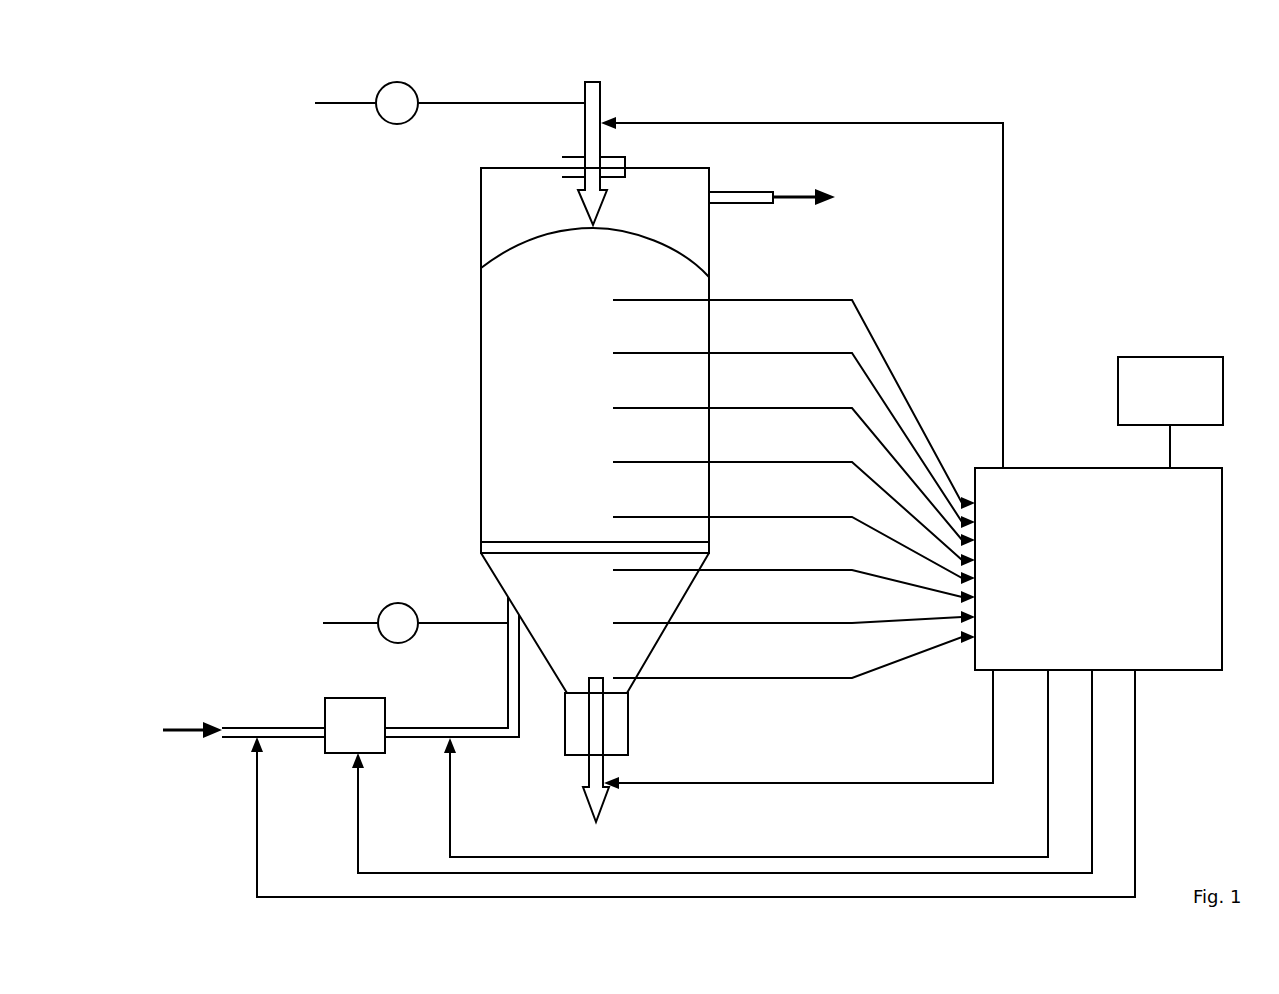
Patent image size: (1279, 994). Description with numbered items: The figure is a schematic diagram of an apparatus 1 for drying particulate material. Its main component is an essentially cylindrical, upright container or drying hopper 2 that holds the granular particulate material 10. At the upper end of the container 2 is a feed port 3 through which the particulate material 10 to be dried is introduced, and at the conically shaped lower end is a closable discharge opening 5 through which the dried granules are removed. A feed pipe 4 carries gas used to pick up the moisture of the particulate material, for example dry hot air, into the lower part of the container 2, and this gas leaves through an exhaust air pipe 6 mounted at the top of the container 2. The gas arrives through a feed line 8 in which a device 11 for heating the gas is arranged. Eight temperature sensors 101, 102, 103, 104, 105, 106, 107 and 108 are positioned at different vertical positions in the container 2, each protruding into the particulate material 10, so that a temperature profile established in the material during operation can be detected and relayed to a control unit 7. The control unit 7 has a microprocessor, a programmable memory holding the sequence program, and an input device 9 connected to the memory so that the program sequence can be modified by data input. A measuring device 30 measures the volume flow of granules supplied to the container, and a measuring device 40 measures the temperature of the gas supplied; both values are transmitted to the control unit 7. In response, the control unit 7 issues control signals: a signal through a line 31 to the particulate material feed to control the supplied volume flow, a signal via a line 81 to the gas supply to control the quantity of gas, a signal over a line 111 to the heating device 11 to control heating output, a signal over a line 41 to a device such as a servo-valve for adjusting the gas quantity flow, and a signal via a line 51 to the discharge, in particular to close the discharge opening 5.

The apparatus for drying particulate material 1 is at (1136, 163).
The drying hopper 2 is at (481, 286).
The feed port 3 is at (570, 157).
The feed pipe 4 is at (508, 683).
The discharge opening 5 is at (628, 750).
The exhaust air pipe 6 is at (730, 186).
The control unit 7 is at (1048, 467).
The feed line 8 is at (312, 727).
The input device 9 is at (1167, 355).
The particulate material 10 is at (497, 409).
The device for heating the gas 11 is at (377, 698).
The measuring device 30 is at (384, 123).
The line 31 is at (627, 120).
The measuring device 40 is at (401, 603).
The line 41 is at (450, 814).
The line 51 is at (740, 779).
The line 81 is at (257, 831).
The temperature sensor 101 is at (794, 654).
The temperature sensor 102 is at (794, 608).
The temperature sensor 103 is at (794, 571).
The temperature sensor 104 is at (794, 535).
The temperature sensor 105 is at (794, 499).
The temperature sensor 106 is at (794, 462).
The temperature sensor 107 is at (794, 425).
The temperature sensor 108 is at (794, 389).
The line 111 is at (358, 831).